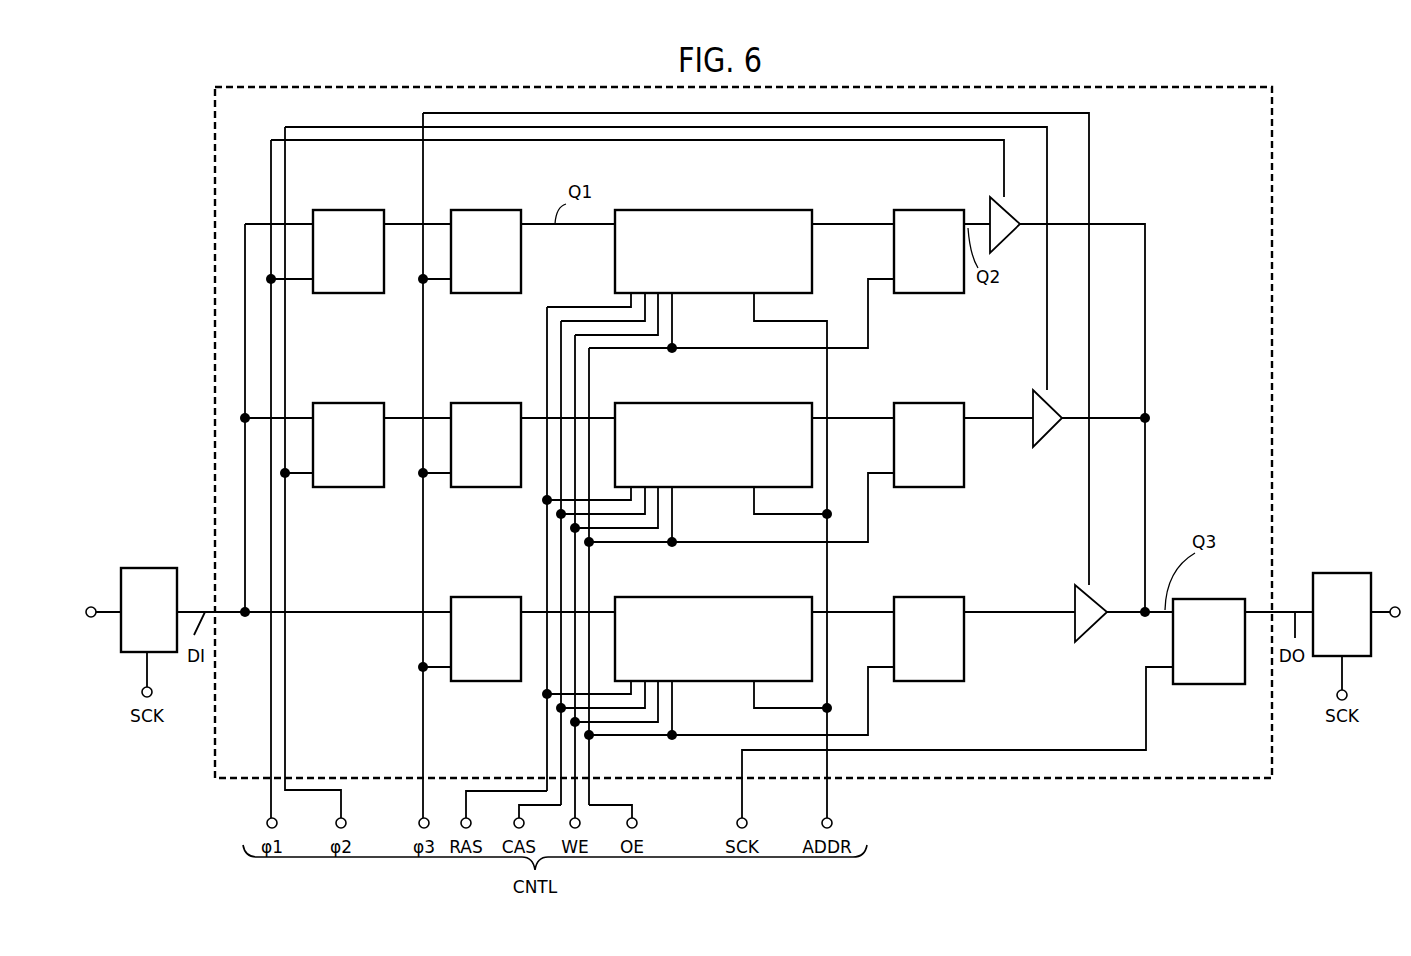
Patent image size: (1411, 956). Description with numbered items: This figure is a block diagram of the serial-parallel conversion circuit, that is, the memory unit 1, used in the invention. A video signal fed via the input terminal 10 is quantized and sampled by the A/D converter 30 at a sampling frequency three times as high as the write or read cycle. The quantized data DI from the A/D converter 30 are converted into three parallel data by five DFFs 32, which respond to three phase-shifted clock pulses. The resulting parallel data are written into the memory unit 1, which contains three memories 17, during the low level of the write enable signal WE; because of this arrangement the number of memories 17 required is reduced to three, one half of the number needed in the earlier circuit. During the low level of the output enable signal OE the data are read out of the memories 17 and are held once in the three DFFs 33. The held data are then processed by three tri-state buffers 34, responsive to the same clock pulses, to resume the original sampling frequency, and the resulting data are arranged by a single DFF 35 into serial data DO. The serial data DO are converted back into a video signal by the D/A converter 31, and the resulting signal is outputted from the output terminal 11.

The memory unit 1 is at (882, 87).
The input terminal 10 is at (94, 617).
The output terminal 11 is at (1393, 618).
The memory 17 is at (745, 210).
The A/D converter 30 is at (140, 568).
The D/A converter 31 is at (1335, 573).
The DFF 32 is at (345, 210).
The DFF 33 is at (925, 210).
The tri-state buffer 34 is at (1008, 213).
The DFF 35 is at (1208, 599).